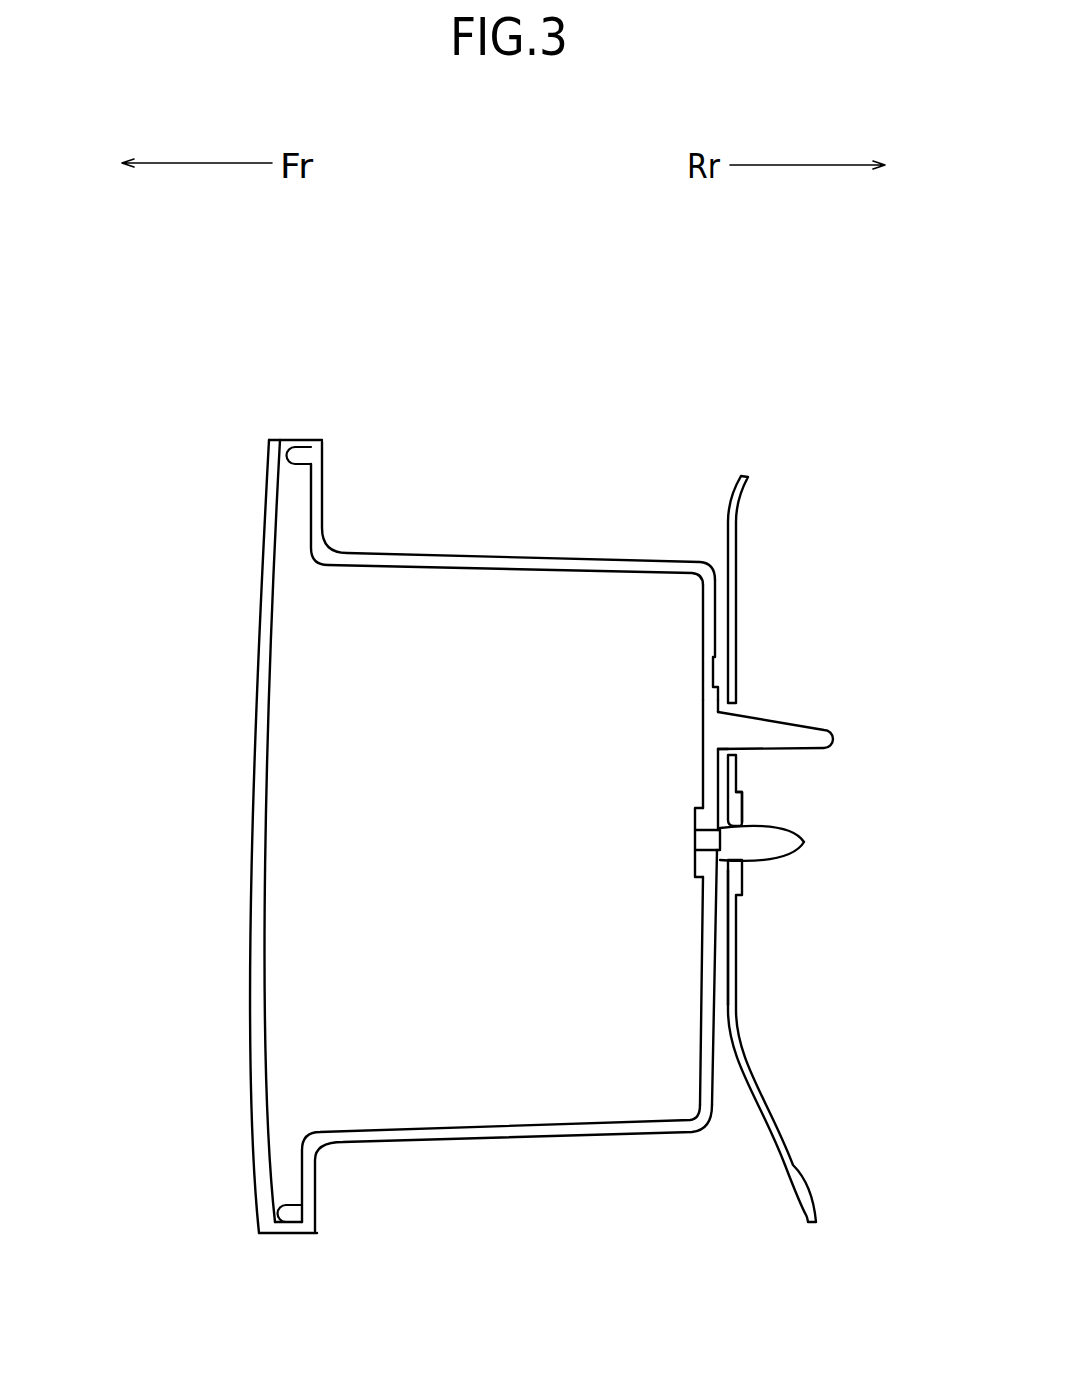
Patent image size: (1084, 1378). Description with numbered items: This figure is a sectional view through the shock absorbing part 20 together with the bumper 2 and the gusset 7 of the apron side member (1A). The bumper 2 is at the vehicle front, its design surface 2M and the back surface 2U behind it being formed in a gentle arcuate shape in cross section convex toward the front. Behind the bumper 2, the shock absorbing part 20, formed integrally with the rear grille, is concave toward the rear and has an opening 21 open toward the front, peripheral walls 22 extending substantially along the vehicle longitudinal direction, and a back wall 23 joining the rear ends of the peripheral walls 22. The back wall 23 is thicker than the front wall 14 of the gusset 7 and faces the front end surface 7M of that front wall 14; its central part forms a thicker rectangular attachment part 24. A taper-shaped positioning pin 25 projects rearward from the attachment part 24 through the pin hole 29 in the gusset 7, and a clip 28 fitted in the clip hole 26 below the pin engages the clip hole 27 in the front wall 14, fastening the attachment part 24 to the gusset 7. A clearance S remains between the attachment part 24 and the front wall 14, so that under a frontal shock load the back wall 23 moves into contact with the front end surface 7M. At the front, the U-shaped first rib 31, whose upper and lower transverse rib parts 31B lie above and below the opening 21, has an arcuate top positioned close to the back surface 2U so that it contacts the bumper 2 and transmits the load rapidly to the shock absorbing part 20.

The bumper 2 is at (268, 833).
The design surface 2M is at (252, 740).
The back surface 2U is at (270, 697).
The gusset 7 is at (737, 894).
The interior member 1A is at (737, 894).
The front end surface 7M is at (725, 990).
The front wall 14 is at (737, 849).
The shock absorbing part 20 is at (504, 765).
The opening 21 is at (503, 859).
The peripheral wall 22 is at (548, 557).
The back wall 23 is at (716, 612).
The attachment part 24 is at (663, 894).
The positioning pin 25 is at (787, 720).
The clip hole 26 is at (700, 855).
The clip hole 27 is at (735, 820).
The clip 28 is at (780, 867).
The pin hole 29 is at (737, 752).
The first rib 31 is at (326, 833).
The transverse rib part 31B is at (302, 447).
The clearance S is at (724, 1090).